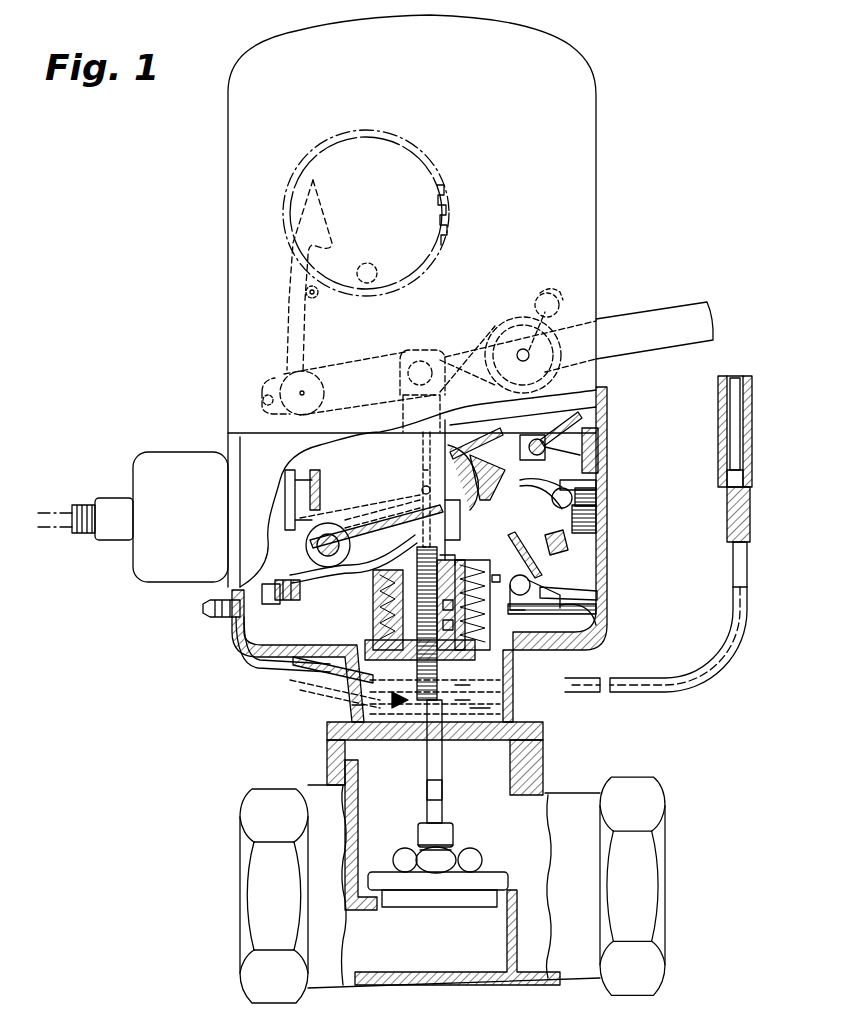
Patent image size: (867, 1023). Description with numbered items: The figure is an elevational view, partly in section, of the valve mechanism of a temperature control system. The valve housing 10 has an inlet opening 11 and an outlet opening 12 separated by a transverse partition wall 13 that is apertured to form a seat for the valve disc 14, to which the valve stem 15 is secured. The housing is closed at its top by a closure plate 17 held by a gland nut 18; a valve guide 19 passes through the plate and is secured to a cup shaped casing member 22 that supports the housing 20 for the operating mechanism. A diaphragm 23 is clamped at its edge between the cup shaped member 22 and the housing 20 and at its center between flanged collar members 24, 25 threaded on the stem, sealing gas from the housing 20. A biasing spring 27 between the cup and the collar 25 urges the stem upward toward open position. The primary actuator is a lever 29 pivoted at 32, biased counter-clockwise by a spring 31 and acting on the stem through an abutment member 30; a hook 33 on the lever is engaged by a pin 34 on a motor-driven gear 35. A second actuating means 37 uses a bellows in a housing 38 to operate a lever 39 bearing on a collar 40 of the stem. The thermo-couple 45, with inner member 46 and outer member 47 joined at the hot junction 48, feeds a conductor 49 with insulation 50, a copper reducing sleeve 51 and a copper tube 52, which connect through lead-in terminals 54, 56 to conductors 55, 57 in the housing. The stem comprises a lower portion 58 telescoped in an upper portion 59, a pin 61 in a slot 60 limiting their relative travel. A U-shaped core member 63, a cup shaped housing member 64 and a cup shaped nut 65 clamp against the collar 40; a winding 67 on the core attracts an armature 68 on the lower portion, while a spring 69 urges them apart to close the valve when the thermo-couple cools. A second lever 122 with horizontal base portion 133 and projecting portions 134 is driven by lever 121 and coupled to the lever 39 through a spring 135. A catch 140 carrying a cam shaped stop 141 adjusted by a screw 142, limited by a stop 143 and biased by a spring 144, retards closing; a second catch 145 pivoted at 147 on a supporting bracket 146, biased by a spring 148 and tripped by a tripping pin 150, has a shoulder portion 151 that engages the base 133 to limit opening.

The valve housing 10 is at (340, 805).
The inlet opening 11 is at (258, 805).
The outlet opening 12 is at (636, 790).
The transverse partition wall 13 is at (360, 852).
The valve disc 14 is at (492, 872).
The valve stem 15 is at (392, 700).
The closure plate 17 is at (530, 755).
The gland nut 18 is at (543, 730).
The valve guide 19 is at (443, 760).
The housing 20 is at (606, 520).
The cup shaped casing member 22 is at (352, 706).
The diaphragm 23 is at (472, 690).
The flanged collar member 24 is at (368, 650).
The flanged collar member 25 is at (390, 680).
The biasing spring 27 is at (470, 712).
The lever 29 is at (383, 368).
The abutment member 30 is at (440, 393).
The spring 31 is at (517, 317).
The pivot 32 is at (563, 308).
The hook 33 is at (288, 309).
The pin 34 is at (373, 266).
The gear 35 is at (432, 188).
The second actuating means 37 is at (262, 468).
The bellows housing 38 is at (166, 572).
The lever 39 is at (447, 515).
The collar 40 is at (466, 572).
The thermo-couple 45 is at (675, 517).
The inner member 46 is at (738, 378).
The outer member 47 is at (752, 385).
The hot junction 48 is at (730, 378).
The conductor 49 is at (750, 472).
The insulation 50 is at (747, 555).
The copper reducing sleeve 51 is at (750, 500).
The copper tube 52 is at (750, 598).
The lead-in terminal 54 is at (218, 617).
The conductor 55 is at (308, 567).
The second lead-in terminal 56 is at (292, 606).
The conductor 57 is at (312, 590).
The lower stem portion 58 is at (427, 794).
The upper stem portion 59 is at (412, 443).
The slot 60 is at (412, 505).
The pin 61 is at (420, 492).
The core member 63 is at (380, 598).
The cup shaped housing member 64 is at (486, 580).
The cup shaped nut 65 is at (496, 580).
The winding 67 is at (470, 608).
The armature 68 is at (470, 626).
The spring 69 is at (378, 618).
The lever 121 is at (552, 500).
The second lever 122 is at (360, 450).
The base portion 133 is at (486, 455).
The projecting portions 134 is at (325, 462).
The spring 135 is at (452, 448).
The catch 140 is at (548, 590).
The cam shaped stop 141 is at (510, 528).
The screw 142 is at (566, 522).
The stop 143 is at (594, 590).
The spring 144 is at (560, 618).
The second catch 145 is at (598, 492).
The supporting bracket 146 is at (595, 425).
The pivot 147 is at (522, 448).
The spring 148 is at (545, 438).
The tripping pin 150 is at (598, 512).
The shoulder portion 151 is at (597, 475).